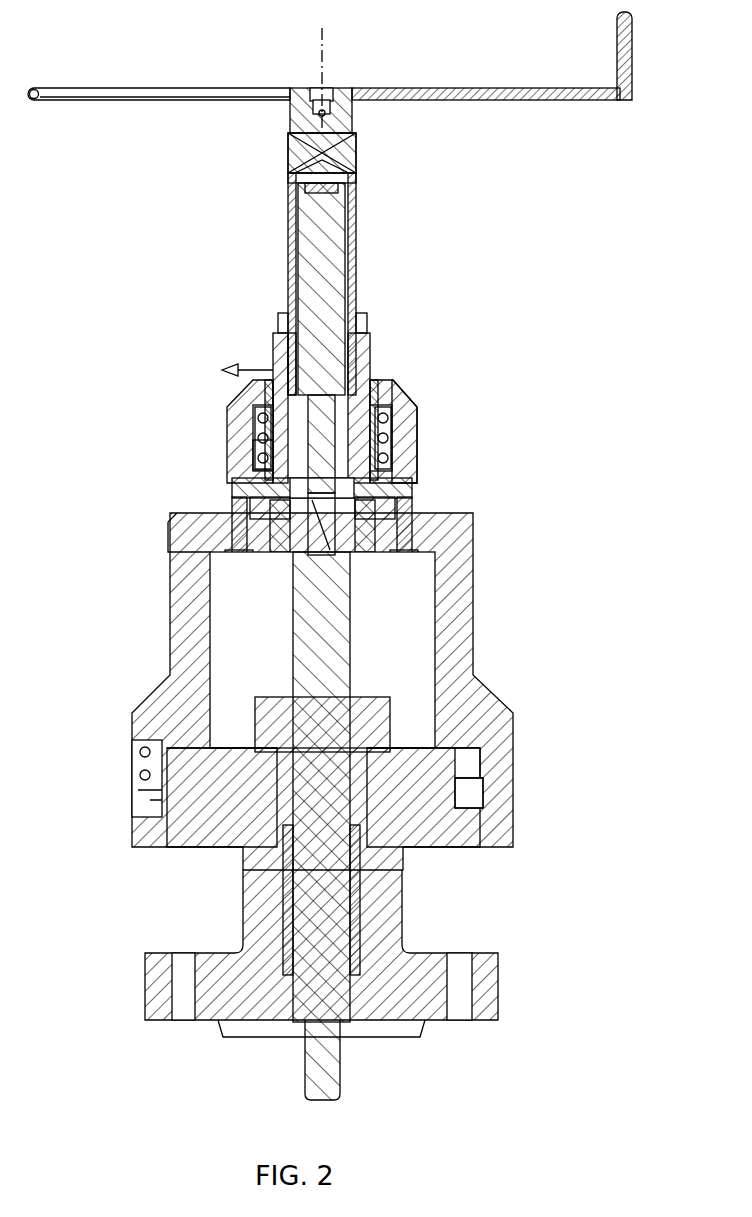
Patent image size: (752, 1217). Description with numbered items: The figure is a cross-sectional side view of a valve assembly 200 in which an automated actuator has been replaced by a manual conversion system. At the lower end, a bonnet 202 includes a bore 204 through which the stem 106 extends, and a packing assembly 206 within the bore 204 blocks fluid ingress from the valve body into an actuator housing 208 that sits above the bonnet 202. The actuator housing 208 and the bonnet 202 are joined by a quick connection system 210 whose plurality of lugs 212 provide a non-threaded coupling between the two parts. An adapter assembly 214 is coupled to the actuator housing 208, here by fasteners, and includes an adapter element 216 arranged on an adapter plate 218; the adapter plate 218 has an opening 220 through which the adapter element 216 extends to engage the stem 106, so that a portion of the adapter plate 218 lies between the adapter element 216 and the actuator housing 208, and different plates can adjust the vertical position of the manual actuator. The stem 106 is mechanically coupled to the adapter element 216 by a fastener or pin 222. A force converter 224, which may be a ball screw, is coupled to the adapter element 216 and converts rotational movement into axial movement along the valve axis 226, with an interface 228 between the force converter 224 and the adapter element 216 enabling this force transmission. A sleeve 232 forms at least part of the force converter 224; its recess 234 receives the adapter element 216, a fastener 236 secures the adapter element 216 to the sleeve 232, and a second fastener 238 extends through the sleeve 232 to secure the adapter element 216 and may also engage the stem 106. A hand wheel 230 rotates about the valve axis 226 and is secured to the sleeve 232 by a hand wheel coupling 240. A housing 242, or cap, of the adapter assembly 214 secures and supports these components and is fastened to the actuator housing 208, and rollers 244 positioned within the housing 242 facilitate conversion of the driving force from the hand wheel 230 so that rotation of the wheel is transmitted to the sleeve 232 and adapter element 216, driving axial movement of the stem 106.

The valve assembly 200 is at (110, 283).
The stem 106 is at (323, 623).
The bonnet 202 is at (490, 985).
The bore 204 is at (357, 915).
The packing assembly 206 is at (243, 727).
The actuator housing 208 is at (460, 720).
The quick connection system 210 is at (127, 790).
The lugs 212 is at (475, 797).
The adapter assembly 214 is at (167, 425).
The adapter element 216 is at (345, 478).
The adapter plate 218 is at (255, 485).
The opening 220 is at (268, 512).
The pin 222 is at (440, 530).
The force converter 224 is at (222, 385).
The valve axis 226 is at (320, 50).
The interface 228 is at (362, 390).
The hand wheel 230 is at (630, 62).
The sleeve 232 is at (335, 282).
The recess 234 is at (300, 388).
The fastener 236 is at (385, 410).
The second fastener 238 is at (345, 155).
The hand wheel coupling 240 is at (296, 151).
The housing 242 is at (408, 440).
The rollers 244 is at (262, 452).